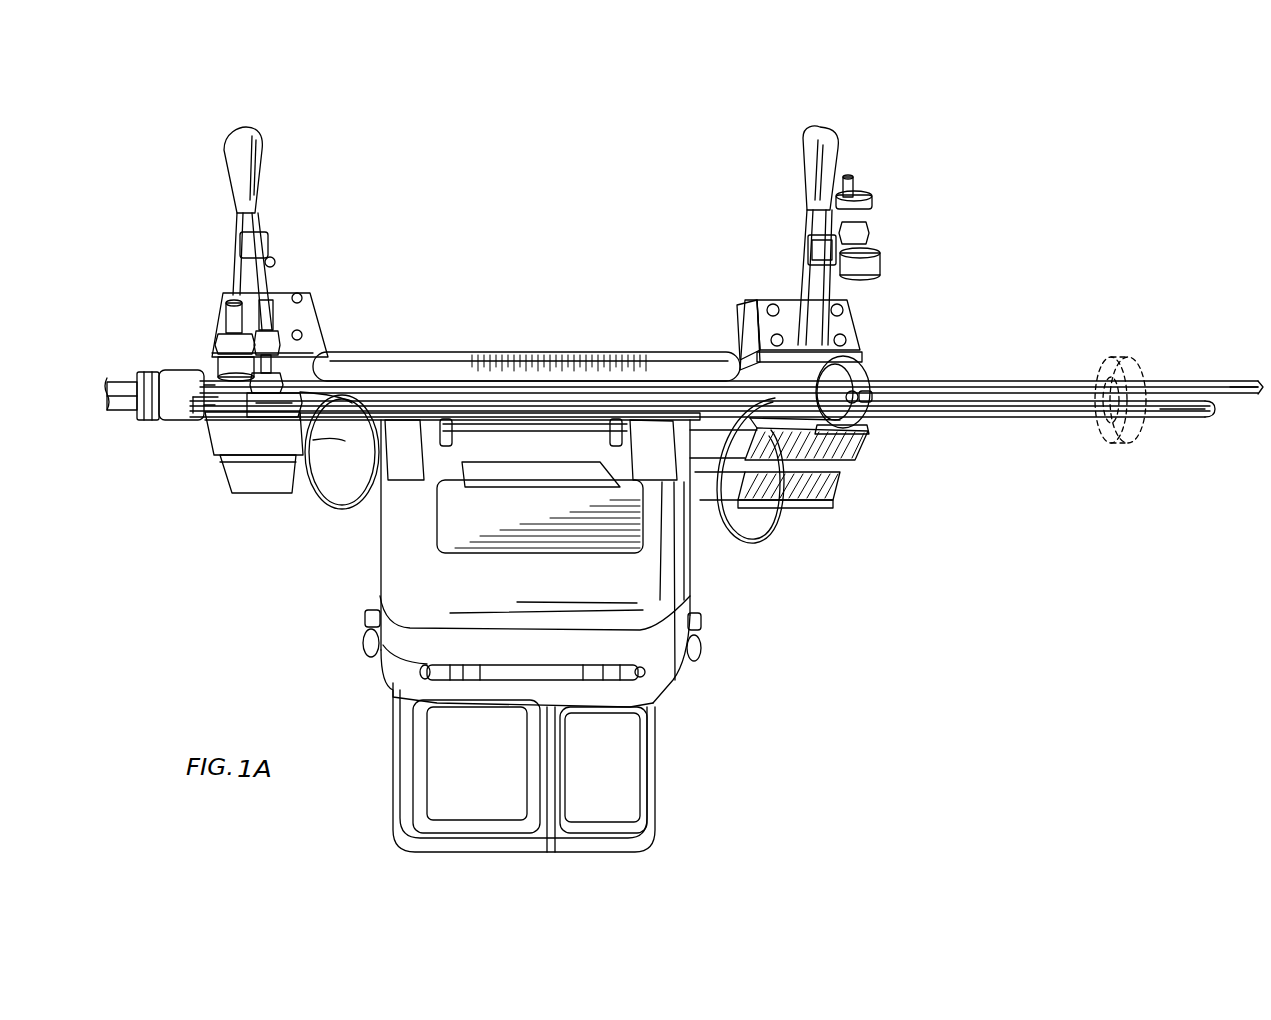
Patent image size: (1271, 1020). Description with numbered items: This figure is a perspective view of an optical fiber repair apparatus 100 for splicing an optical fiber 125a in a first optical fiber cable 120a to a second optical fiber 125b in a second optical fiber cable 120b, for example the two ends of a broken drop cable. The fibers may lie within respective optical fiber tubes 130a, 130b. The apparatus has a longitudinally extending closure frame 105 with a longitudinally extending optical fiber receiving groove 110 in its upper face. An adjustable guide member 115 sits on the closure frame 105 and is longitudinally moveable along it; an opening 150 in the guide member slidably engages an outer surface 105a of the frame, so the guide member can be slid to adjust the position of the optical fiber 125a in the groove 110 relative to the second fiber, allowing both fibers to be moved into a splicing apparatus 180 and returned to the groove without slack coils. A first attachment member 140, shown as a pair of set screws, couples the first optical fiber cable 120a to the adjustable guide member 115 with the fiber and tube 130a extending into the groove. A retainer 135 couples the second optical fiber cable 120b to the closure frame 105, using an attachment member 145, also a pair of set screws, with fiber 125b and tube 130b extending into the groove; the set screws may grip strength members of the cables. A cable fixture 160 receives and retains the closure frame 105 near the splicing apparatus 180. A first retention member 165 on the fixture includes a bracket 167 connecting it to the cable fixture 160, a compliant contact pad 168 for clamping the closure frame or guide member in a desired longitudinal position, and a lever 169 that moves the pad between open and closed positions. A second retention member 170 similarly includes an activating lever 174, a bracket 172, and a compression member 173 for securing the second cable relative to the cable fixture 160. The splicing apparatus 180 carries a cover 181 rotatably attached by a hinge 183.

The optical fiber repair apparatus 100 is at (1050, 280).
The closure frame 105 is at (1178, 420).
The outer surface of the closure frame 105a is at (1153, 412).
The optical fiber receiving groove 110 is at (390, 395).
The adjustable guide member 115 is at (850, 418).
The first optical fiber cable 120a is at (1232, 381).
The second optical fiber cable 120b is at (108, 380).
The optical fiber 125a is at (730, 545).
The second optical fiber 125b is at (348, 508).
The optical fiber tube 130a is at (815, 420).
The optical fiber tube 130b is at (343, 435).
The retainer 135 is at (183, 425).
The first attachment member 140 is at (852, 355).
The attachment member 145 is at (283, 343).
The opening 150 is at (790, 348).
The cable fixture 160 is at (838, 500).
The first retention member 165 is at (846, 248).
The bracket 167 is at (866, 325).
The contact pad 168 is at (866, 238).
The lever 169 is at (836, 160).
The second retention member 170 is at (249, 253).
The bracket 172 is at (222, 305).
The compression member 173 is at (230, 400).
The activating lever 174 is at (238, 127).
The splicing apparatus 180 is at (642, 670).
The cover 181 is at (695, 597).
The hinge 183 is at (660, 683).